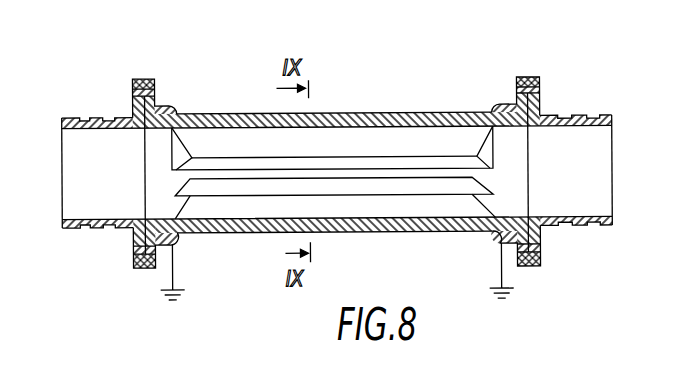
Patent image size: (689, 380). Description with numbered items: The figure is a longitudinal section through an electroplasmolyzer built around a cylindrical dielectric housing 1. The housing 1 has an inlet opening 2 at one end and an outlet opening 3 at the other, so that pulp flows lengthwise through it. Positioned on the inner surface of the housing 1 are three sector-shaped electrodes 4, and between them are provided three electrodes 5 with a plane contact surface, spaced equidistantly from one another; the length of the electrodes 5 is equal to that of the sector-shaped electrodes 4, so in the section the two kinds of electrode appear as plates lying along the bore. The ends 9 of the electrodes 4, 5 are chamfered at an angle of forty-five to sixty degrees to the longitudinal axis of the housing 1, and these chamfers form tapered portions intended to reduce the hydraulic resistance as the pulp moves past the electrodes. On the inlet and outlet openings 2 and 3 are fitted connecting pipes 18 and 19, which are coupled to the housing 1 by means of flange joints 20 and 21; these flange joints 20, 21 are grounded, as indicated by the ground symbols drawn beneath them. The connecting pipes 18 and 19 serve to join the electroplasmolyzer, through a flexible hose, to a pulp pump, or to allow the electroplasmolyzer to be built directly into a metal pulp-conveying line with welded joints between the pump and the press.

The cylindrical housing 1 is at (212, 115).
The inlet opening 2 is at (62, 136).
The outlet opening 3 is at (613, 129).
The sector-shaped electrode 4 is at (385, 145).
The electrode with plane contact surface 5 is at (333, 183).
The chamfered end of electrode 9 is at (185, 178).
The connecting pipe 18 is at (99, 116).
The connecting pipe 19 is at (573, 115).
The flange joint 20 is at (143, 78).
The flange joint 21 is at (523, 77).